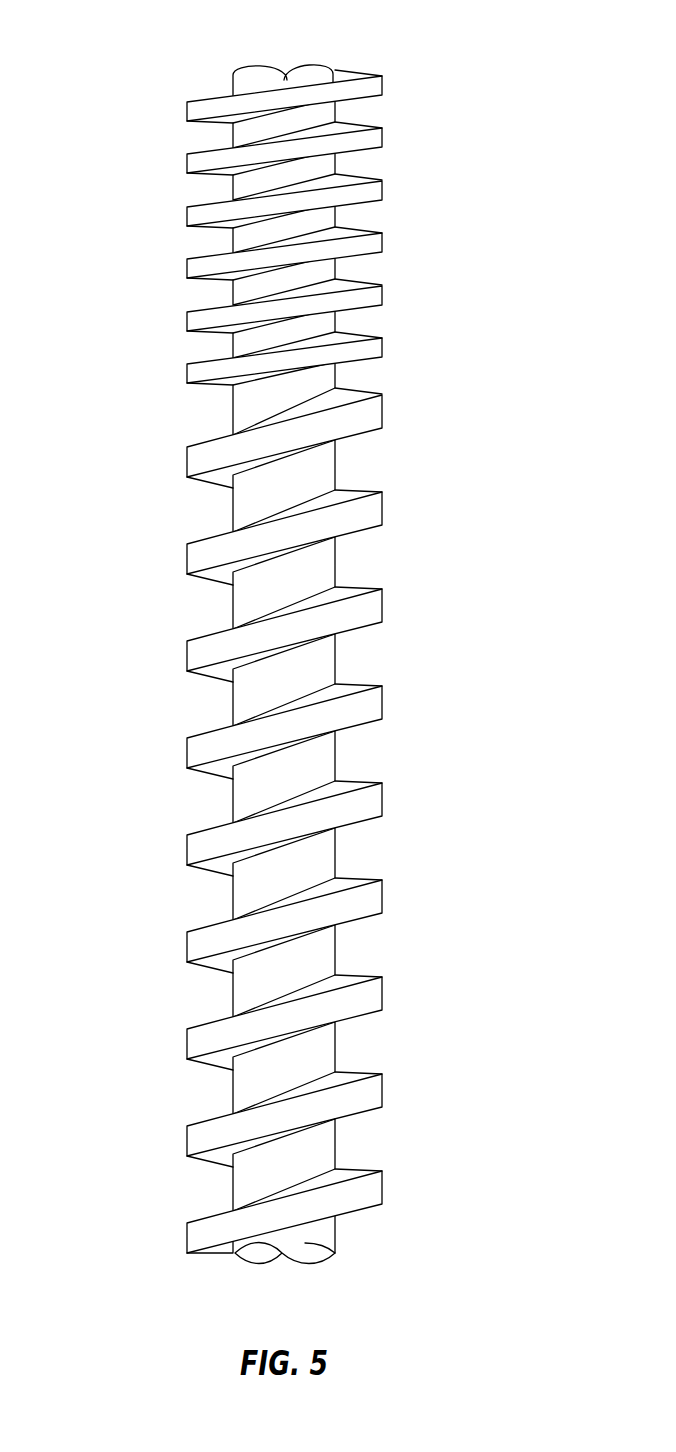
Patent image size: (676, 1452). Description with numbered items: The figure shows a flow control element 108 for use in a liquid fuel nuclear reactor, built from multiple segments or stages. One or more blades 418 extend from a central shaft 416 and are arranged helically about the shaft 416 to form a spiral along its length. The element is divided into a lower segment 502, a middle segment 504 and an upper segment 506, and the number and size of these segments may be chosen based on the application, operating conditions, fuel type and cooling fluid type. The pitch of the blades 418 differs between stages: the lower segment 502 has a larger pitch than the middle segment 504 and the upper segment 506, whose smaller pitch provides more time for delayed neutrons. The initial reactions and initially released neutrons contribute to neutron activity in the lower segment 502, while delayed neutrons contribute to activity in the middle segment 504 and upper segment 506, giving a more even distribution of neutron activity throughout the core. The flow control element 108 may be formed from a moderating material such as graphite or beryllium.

The flow control element 108 is at (173, 36).
The upper segment 506 is at (443, 58).
The middle segment 504 is at (443, 155).
The lower segment 502 is at (443, 357).
The blades 418 is at (207, 1137).
The shaft 416 is at (337, 1256).